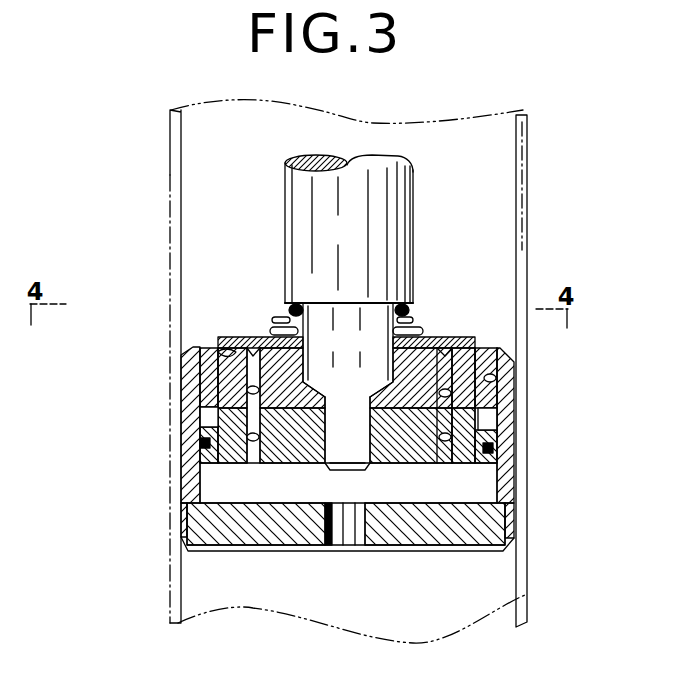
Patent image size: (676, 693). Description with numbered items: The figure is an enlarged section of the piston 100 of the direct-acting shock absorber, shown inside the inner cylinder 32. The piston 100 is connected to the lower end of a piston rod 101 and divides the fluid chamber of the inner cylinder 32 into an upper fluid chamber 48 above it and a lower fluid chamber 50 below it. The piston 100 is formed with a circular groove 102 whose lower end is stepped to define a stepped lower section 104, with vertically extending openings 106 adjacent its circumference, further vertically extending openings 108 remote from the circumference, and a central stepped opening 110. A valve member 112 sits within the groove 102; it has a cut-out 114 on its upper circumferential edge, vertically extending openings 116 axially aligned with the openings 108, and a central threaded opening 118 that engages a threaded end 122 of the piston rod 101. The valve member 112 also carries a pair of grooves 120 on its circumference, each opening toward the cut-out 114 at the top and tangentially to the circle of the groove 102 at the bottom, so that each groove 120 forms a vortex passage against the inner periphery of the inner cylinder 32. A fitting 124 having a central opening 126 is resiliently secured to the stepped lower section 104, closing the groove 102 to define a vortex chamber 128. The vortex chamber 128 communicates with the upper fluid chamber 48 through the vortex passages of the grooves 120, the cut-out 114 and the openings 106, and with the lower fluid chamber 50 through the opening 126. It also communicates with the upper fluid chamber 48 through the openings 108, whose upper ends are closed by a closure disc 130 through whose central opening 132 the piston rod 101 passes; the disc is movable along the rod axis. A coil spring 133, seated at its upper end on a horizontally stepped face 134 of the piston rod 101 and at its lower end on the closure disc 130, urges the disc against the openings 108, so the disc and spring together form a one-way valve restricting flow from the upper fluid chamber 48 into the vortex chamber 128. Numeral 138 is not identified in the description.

The inner cylinder 32 is at (522, 224).
The upper fluid chamber 48 is at (208, 170).
The lower fluid chamber 50 is at (497, 600).
The piston 100 is at (513, 357).
The piston rod 101 is at (407, 160).
The circular groove 102 is at (492, 487).
The stepped lower section 104 is at (500, 522).
The vertically extending openings 106 is at (210, 347).
The vertically extending openings 108 is at (243, 377).
The central stepped opening 110 is at (348, 350).
The valve member 112 is at (290, 455).
The cut-out 114 is at (202, 413).
The vertically extending opening 116 is at (245, 457).
The central threaded opening 118 is at (340, 442).
The grooves 120 is at (200, 443).
The threaded end 122 is at (352, 448).
The fitting 124 is at (207, 533).
The central opening 126 is at (333, 530).
The vortex chamber 128 is at (435, 482).
The closure disc 130 is at (455, 337).
The central opening 132 is at (385, 316).
The coil spring 133 is at (283, 305).
The horizontally stepped face 134 is at (423, 310).
The seal 138 is at (240, 354).